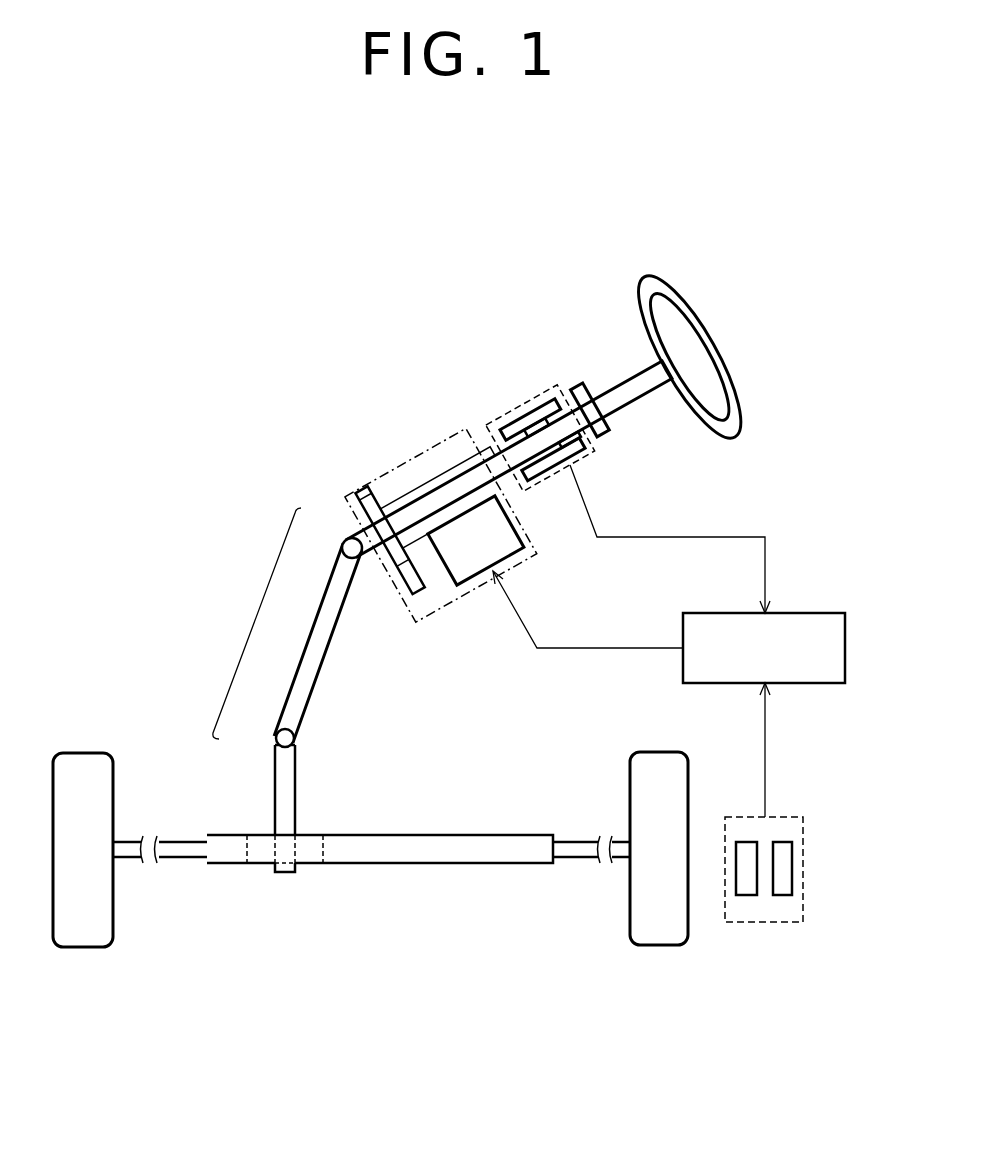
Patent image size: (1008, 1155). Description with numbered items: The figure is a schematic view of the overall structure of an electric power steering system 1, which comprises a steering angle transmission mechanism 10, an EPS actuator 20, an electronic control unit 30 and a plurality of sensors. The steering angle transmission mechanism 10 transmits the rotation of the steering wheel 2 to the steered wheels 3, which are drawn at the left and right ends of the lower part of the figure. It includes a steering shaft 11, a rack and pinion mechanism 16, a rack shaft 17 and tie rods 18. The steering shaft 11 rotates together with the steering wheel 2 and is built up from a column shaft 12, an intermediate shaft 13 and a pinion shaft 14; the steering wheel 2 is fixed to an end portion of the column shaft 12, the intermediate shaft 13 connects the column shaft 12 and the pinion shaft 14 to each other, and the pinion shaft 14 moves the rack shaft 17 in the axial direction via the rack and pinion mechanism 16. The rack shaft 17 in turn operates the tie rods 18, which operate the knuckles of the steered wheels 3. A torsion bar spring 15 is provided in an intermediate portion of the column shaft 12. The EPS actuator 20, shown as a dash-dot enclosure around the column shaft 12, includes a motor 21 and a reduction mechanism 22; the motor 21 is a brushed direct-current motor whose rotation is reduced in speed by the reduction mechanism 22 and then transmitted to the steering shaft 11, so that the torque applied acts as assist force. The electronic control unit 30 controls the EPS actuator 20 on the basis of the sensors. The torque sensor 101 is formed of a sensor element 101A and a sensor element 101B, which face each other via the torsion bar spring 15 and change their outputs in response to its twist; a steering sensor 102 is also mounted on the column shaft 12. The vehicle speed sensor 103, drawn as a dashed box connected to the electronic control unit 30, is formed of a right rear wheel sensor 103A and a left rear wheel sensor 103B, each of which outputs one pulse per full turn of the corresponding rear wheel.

The electric power steering system 1 is at (401, 352).
The steering wheel 2 is at (733, 375).
The steered wheels 3 is at (100, 752).
The steering angle transmission mechanism 10 is at (237, 522).
The steering shaft 11 is at (252, 626).
The column shaft 12 is at (350, 532).
The intermediate shaft 13 is at (312, 628).
The pinion shaft 14 is at (274, 760).
The torsion bar spring 15 is at (522, 416).
The rack and pinion mechanism 16 is at (310, 836).
The rack shaft 17 is at (378, 835).
The tie rods 18 is at (180, 840).
The EPS actuator 20 is at (412, 462).
The motor 21 is at (476, 594).
The reduction mechanism 22 is at (405, 586).
The electronic control unit 30 is at (829, 612).
The torque sensor 101 is at (538, 393).
The sensor element 101A is at (508, 420).
The sensor element 101B is at (546, 472).
The steering sensor 102 is at (578, 380).
The vehicle speed sensor 103 is at (803, 868).
The right rear wheel sensor 103A is at (745, 897).
The left rear wheel sensor 103B is at (783, 897).